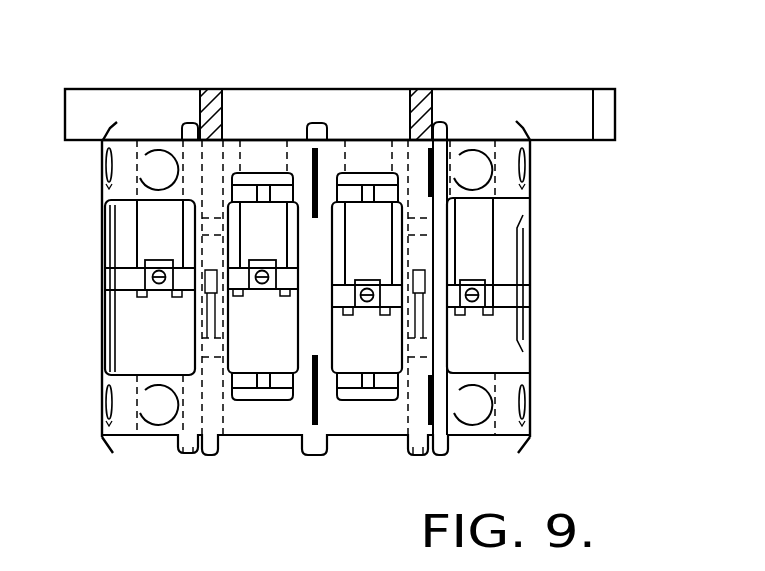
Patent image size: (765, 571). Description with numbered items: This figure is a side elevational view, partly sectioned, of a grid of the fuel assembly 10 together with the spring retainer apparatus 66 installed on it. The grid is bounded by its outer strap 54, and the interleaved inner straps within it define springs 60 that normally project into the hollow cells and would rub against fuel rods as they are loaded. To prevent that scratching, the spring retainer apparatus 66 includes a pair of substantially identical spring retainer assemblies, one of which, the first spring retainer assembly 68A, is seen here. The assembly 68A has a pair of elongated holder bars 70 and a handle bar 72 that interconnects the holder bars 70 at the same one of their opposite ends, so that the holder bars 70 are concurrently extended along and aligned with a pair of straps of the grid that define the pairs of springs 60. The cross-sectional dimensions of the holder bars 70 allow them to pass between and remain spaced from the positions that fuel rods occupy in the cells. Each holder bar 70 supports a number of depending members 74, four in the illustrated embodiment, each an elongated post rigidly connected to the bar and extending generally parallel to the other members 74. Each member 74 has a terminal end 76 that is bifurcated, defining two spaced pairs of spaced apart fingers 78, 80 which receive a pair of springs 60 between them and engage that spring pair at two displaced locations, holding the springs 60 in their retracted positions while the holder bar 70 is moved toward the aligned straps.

The fuel assembly 10 is at (38, 478).
The outer strap 54 is at (100, 325).
The springs 60 is at (127, 292).
The spring retainer apparatus 66 is at (634, 74).
The first spring retainer assembly 68A is at (614, 110).
The holder bars 70 is at (200, 110).
The handle bar 72 is at (617, 126).
The depending members 74 is at (137, 224).
The terminal end 76 is at (137, 249).
The fingers 78 is at (147, 297).
The fingers 80 is at (180, 297).